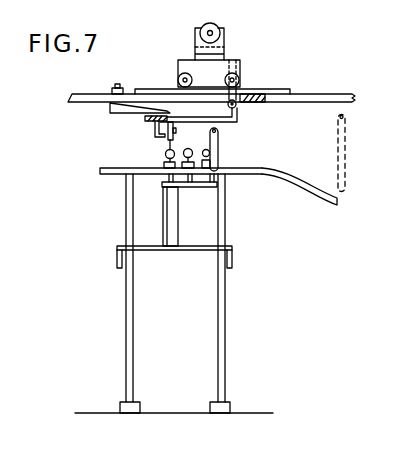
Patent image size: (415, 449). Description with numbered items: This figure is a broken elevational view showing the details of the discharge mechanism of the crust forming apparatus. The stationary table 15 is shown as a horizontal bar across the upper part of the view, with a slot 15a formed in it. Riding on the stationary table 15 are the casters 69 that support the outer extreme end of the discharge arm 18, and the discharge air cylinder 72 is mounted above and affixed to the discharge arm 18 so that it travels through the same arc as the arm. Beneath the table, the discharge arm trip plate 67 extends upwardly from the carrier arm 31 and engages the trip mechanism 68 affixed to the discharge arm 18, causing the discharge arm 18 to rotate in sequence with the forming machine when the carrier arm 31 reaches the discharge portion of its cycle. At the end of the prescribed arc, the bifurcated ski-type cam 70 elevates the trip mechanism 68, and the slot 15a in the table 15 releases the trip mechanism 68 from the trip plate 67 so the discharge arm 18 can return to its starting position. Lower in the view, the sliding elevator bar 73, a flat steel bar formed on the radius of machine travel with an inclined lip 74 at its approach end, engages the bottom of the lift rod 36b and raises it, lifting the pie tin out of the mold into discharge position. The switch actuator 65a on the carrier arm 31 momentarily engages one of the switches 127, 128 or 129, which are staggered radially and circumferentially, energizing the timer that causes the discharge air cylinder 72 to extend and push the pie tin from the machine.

The stationary table 15 is at (100, 73).
The slot 15a is at (248, 94).
The discharge arm 18 is at (224, 49).
The discharge air cylinder 72 is at (200, 33).
The casters 69 is at (237, 88).
The discharge arm trip plate 67 is at (239, 118).
The trip mechanism 68 is at (230, 114).
The bifurcated ski-type cam 70 is at (125, 113).
The carrier arm 31 is at (157, 126).
The switch actuator 65a is at (166, 146).
The lift rod 36b is at (219, 133).
The sliding elevator bar 73 is at (113, 176).
The inclined lip 74 is at (300, 197).
The switch 127 is at (167, 177).
The switch 128 is at (192, 186).
The switch 129 is at (212, 187).